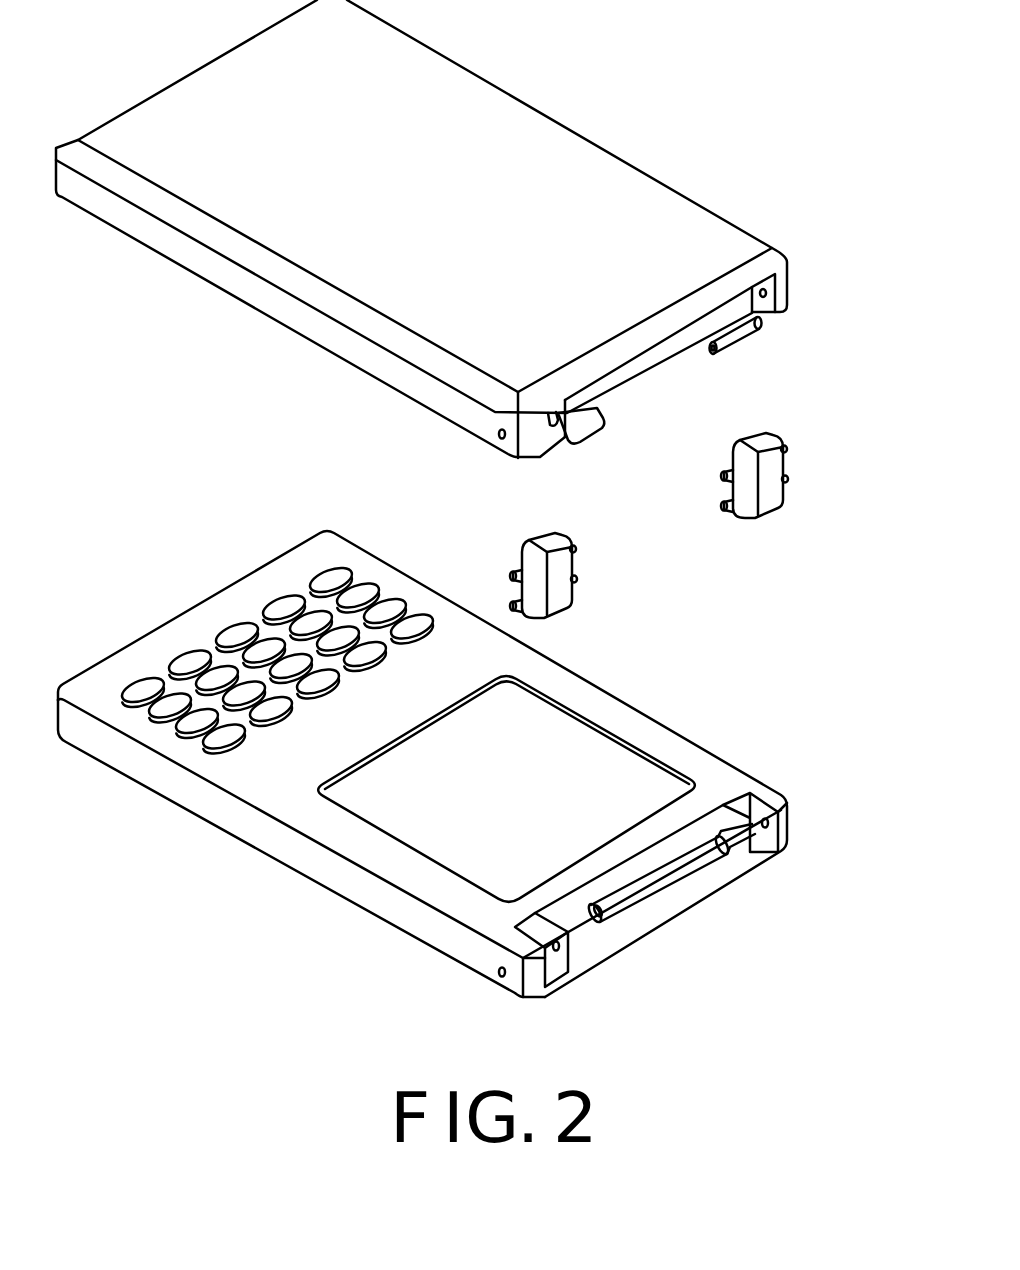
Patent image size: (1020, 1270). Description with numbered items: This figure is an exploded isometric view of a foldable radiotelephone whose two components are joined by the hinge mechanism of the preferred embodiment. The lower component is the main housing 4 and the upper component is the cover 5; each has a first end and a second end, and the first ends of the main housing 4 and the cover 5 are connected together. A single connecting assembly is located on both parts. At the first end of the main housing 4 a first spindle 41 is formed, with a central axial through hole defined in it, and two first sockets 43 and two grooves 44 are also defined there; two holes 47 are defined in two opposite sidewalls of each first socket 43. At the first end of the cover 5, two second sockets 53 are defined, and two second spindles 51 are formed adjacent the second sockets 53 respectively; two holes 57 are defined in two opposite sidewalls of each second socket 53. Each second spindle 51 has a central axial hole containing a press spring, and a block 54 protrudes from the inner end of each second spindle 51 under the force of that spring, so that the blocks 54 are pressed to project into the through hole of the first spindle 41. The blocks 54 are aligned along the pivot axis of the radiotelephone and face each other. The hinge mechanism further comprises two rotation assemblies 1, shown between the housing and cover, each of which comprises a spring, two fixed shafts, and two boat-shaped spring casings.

The rotation assembly 1 is at (800, 450).
The main housing 4 is at (680, 708).
The cover 5 is at (648, 155).
The first spindle 41 is at (662, 877).
The first socket 43 is at (566, 963).
The groove 44 is at (590, 922).
The hole 47 is at (770, 832).
The second spindle 51 is at (588, 424).
The second socket 53 is at (553, 424).
The block 54 is at (713, 352).
The hole 57 is at (766, 291).